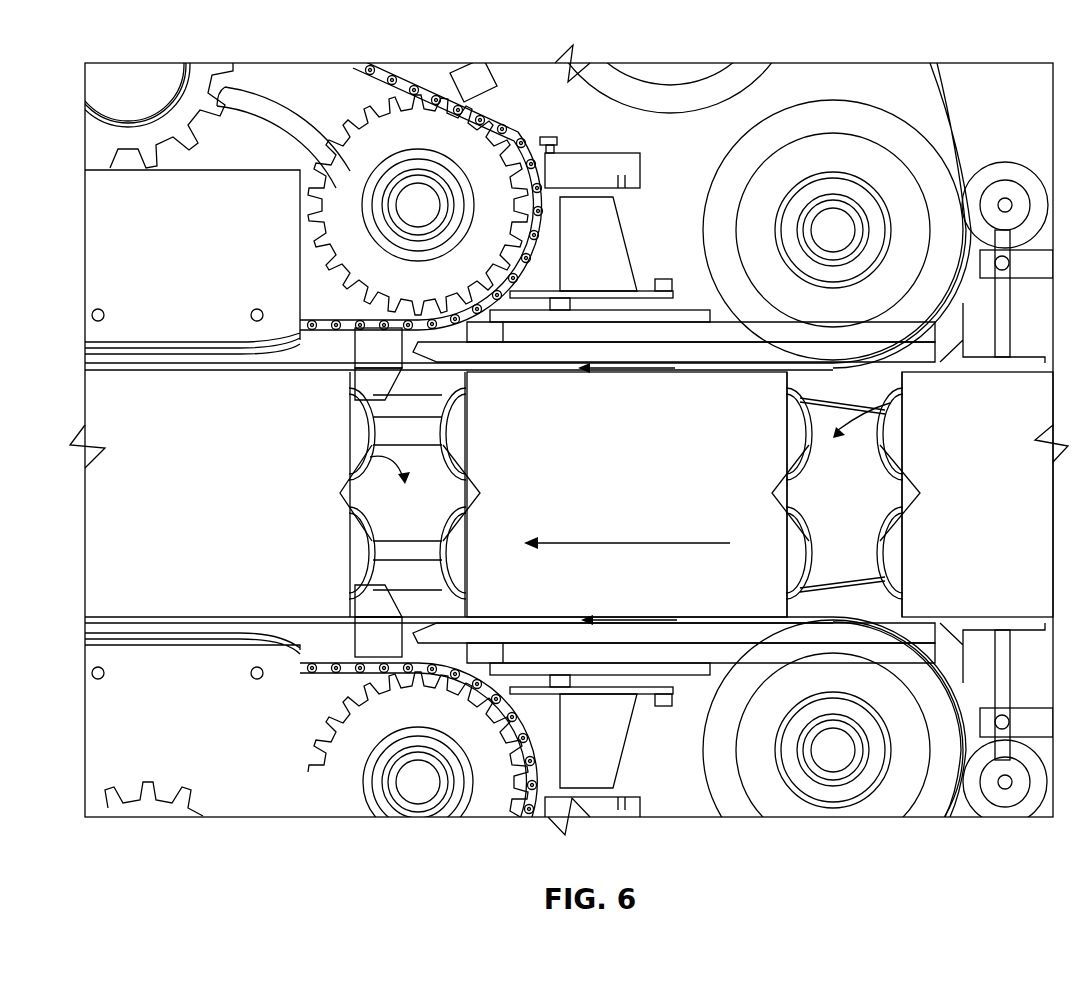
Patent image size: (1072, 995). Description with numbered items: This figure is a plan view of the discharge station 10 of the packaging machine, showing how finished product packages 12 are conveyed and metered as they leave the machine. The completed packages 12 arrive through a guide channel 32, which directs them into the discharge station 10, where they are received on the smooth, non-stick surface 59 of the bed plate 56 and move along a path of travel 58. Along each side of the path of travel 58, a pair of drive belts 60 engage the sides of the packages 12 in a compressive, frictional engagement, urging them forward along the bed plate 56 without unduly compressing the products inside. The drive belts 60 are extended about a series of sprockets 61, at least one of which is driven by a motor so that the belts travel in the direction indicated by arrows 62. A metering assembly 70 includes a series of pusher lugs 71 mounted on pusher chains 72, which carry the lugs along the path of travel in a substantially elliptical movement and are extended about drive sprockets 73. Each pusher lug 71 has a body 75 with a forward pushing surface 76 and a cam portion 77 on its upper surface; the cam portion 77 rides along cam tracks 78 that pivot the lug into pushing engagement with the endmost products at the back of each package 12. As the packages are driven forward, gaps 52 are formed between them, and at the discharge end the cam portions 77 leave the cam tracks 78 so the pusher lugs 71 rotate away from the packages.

The discharge station 10 is at (480, 760).
The product packages 12 is at (186, 507).
The guide channel 32 is at (977, 260).
The gaps 52 is at (338, 486).
The bed plate 56 is at (872, 492).
The path of travel 58 is at (632, 546).
The non-stick surface 59 is at (391, 590).
The drive belts 60 is at (688, 352).
The sprockets 61 is at (932, 167).
The arrows 62 is at (630, 368).
The metering assembly 70 is at (306, 208).
The pusher lugs 71 is at (482, 75).
The pusher chains 72 is at (340, 322).
The drive sprockets 73 is at (484, 217).
The body 75 is at (462, 440).
The pushing surface 76 is at (365, 398).
The cam portion 77 is at (413, 324).
The cam tracks 78 is at (243, 364).